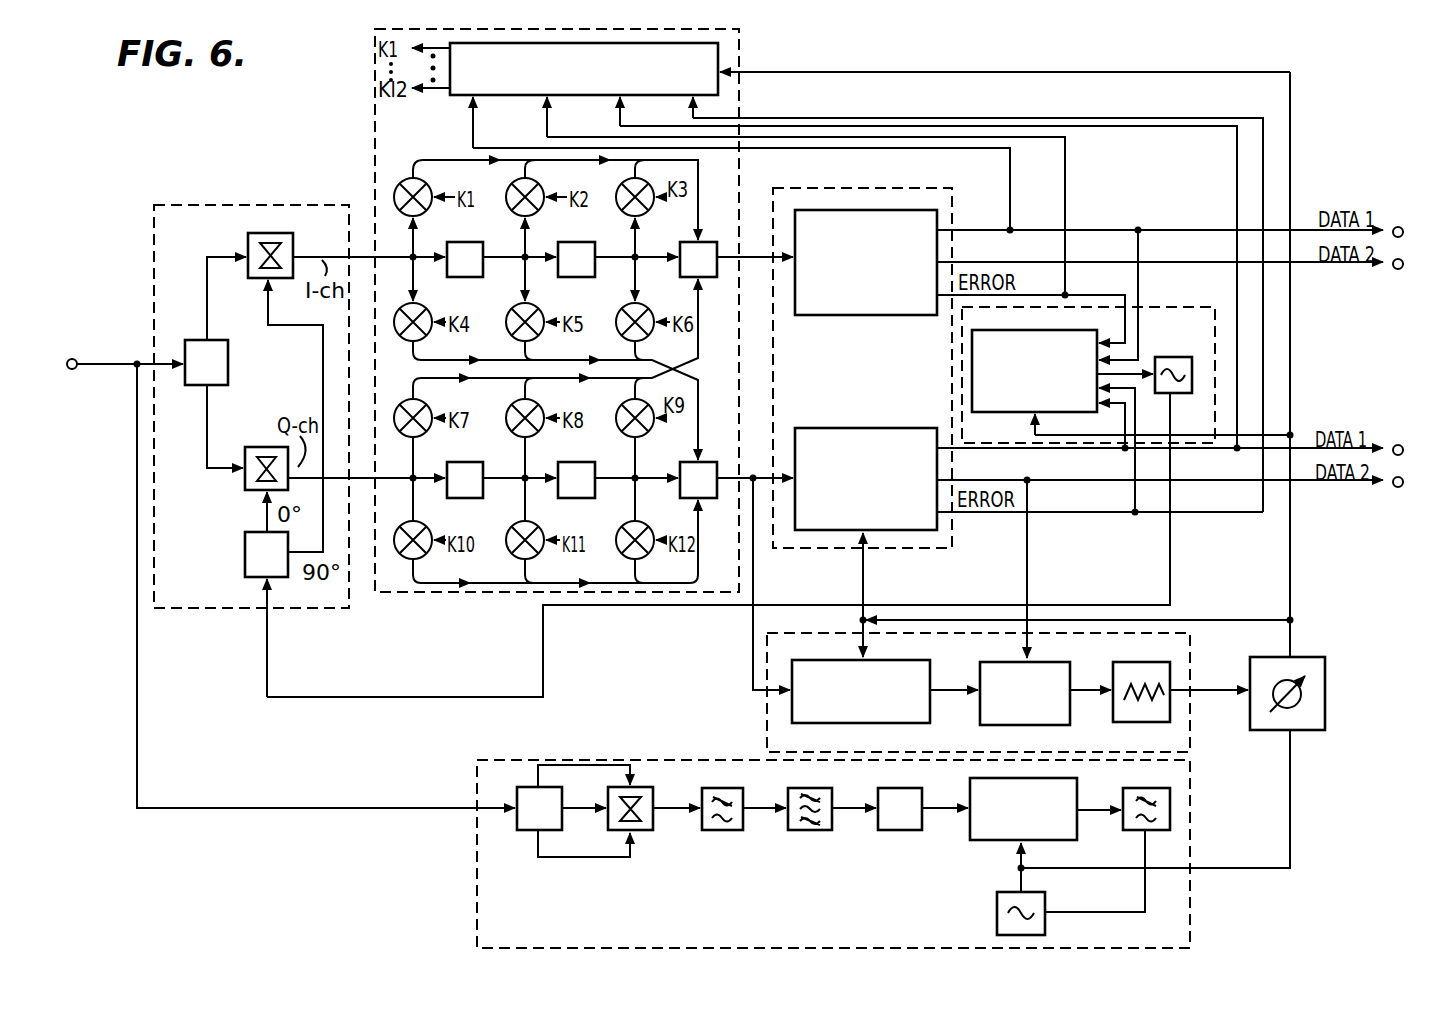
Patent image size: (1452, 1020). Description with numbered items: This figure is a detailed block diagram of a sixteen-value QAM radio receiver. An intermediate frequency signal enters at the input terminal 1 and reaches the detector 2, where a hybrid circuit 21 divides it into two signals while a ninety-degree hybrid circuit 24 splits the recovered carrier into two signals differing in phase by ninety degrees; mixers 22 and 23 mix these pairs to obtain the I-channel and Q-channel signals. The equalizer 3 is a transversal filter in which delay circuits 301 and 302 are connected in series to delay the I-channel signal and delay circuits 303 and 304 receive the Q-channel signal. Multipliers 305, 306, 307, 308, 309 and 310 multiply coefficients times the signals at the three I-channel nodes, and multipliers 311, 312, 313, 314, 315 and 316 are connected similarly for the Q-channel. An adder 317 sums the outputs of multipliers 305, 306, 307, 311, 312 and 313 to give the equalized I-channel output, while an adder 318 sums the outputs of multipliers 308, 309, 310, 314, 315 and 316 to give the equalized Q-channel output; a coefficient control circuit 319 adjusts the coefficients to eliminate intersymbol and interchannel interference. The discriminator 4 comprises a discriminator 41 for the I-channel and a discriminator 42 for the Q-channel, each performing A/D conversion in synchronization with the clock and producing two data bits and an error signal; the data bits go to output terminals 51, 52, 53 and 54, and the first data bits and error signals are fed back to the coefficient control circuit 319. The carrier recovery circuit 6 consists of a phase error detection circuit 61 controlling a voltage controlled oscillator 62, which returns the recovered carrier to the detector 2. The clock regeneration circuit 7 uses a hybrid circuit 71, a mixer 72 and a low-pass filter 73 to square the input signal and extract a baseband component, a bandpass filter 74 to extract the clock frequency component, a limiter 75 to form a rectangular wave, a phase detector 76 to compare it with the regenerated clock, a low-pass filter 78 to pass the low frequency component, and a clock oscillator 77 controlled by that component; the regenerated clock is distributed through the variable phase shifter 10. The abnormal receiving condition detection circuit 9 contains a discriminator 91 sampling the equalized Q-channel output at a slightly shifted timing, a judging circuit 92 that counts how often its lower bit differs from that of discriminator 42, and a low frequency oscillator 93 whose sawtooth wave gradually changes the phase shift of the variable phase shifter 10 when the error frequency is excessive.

The input terminal 1 is at (70, 358).
The detector 2 is at (193, 204).
The equalizer 3 is at (741, 33).
The discriminator 4 is at (913, 550).
The carrier recovery circuit 6 is at (1152, 308).
The clock regeneration circuit 7 is at (475, 876).
The abnormal receiving condition detection circuit 9 is at (1192, 670).
The variable phase shifter 10 is at (1325, 695).
The hybrid circuit 21 is at (229, 358).
The mixer 22 is at (300, 237).
The mixer 23 is at (255, 447).
The 90° hybrid circuit 24 is at (244, 550).
The discriminator 41 is at (873, 317).
The discriminator 42 is at (860, 428).
The output terminal 51 is at (1395, 227).
The output terminal 52 is at (1403, 262).
The output terminal 53 is at (1396, 445).
The output terminal 54 is at (1398, 487).
The phase error detection circuit 61 is at (972, 362).
The voltage controlled oscillator 62 is at (1192, 383).
The hybrid circuit 71 is at (521, 831).
The mixer 72 is at (640, 831).
The low-pass filter 73 is at (728, 831).
The bandpass filter 74 is at (806, 832).
The limiter 75 is at (906, 832).
The phase detector 76 is at (985, 841).
The clock oscillator 77 is at (997, 898).
The low-pass filter 78 is at (1128, 831).
The discriminator 91 is at (928, 712).
The judging circuit 92 is at (979, 680).
The low frequency oscillator 93 is at (1113, 720).
The delay circuit 301 is at (464, 242).
The delay circuit 302 is at (583, 230).
The delay circuit 303 is at (460, 462).
The delay circuit 304 is at (575, 462).
The multiplier 305 is at (400, 178).
The multiplier 306 is at (507, 186).
The multiplier 307 is at (618, 186).
The multiplier 308 is at (427, 308).
The multiplier 309 is at (537, 338).
The multiplier 310 is at (618, 312).
The multiplier 311 is at (400, 400).
The multiplier 312 is at (507, 407).
The multiplier 313 is at (619, 407).
The multiplier 314 is at (425, 557).
The multiplier 315 is at (533, 557).
The multiplier 316 is at (645, 557).
The adder 317 is at (710, 240).
The adder 318 is at (675, 462).
The coefficient control circuit 319 is at (450, 97).